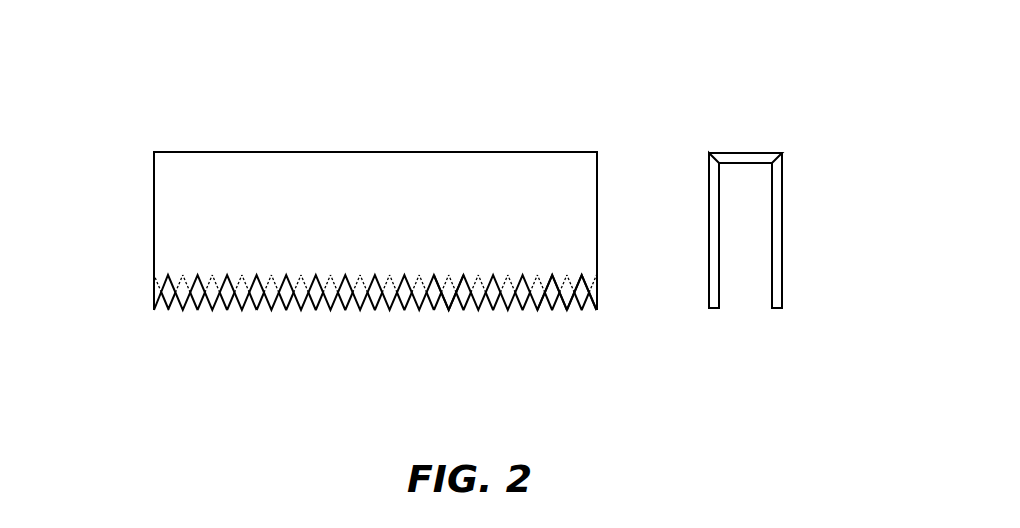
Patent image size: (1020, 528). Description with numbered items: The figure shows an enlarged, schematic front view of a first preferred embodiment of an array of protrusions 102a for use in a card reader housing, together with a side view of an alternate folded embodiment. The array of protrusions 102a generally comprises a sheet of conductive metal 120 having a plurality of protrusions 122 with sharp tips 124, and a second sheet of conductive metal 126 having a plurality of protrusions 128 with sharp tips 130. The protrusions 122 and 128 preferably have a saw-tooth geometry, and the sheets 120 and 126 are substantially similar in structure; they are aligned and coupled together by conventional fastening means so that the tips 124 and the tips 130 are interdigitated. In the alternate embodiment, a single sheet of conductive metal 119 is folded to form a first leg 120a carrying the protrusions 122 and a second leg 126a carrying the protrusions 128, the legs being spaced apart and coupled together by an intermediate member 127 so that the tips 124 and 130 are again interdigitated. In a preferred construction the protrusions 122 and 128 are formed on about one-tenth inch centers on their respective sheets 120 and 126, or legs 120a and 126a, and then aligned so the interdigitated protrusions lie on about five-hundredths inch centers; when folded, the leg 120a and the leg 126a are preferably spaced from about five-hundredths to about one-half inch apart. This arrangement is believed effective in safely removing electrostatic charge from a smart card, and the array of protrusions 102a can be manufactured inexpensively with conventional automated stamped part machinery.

In FIG. 2, the array of protrusions 102a is at (136, 231).
In FIG. 2A, the array of protrusions 102a is at (819, 230).
In FIG. 2A, the single sheet of conductive metal 119 is at (826, 219).
In FIG. 2, the sheet of conductive metal 120 is at (251, 223).
In FIG. 2A, the first leg 120a is at (709, 202).
In FIG. 2, the protrusions 122 is at (212, 310).
In FIG. 2, the sharp tips 124 is at (258, 310).
In FIG. 2, the second sheet of conductive metal 126 is at (330, 280).
In FIG. 2A, the second leg 126a is at (782, 272).
In FIG. 2, the intermediate member 127 is at (427, 152).
In FIG. 2A, the intermediate member 127 is at (745, 158).
In FIG. 2, the protrusions 128 is at (545, 308).
In FIG. 2, the sharp tips 130 is at (448, 310).